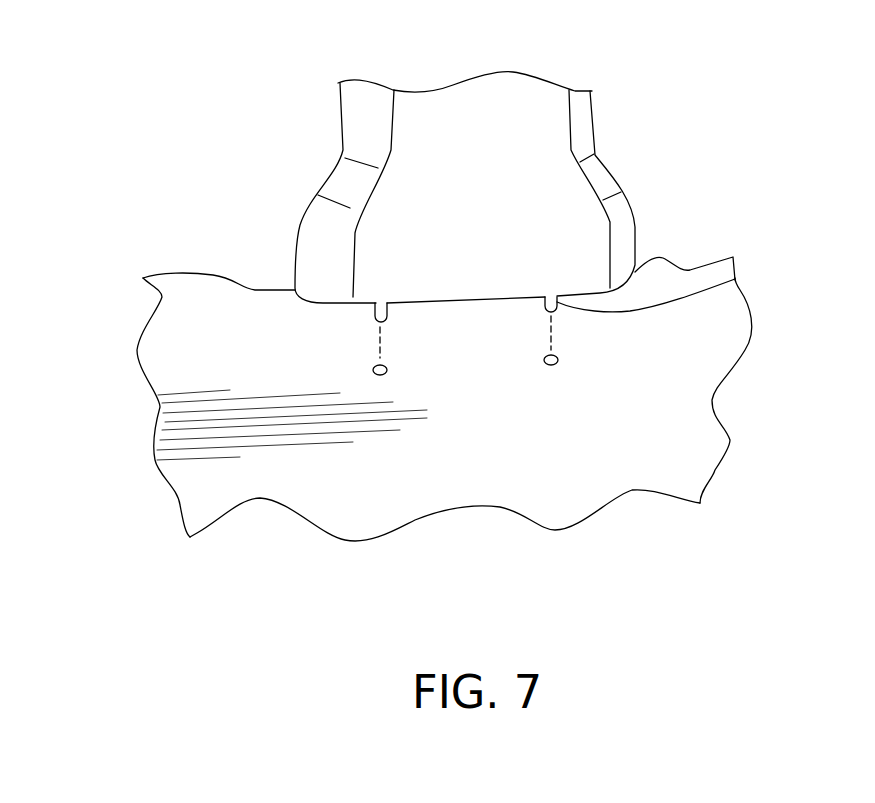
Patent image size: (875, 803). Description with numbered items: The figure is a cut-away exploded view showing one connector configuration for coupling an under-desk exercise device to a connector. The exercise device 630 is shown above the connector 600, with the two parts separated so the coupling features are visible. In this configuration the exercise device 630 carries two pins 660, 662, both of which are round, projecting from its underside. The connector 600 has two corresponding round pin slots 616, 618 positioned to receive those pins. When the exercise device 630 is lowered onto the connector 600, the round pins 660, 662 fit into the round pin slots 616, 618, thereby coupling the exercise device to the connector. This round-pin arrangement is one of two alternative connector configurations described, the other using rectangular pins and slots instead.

The connector 600 is at (163, 350).
The pin 660 is at (736, 278).
The exercise device 630 is at (620, 110).
The pin 662 is at (373, 313).
The pin slot 618 is at (387, 371).
The pin slot 616 is at (557, 360).